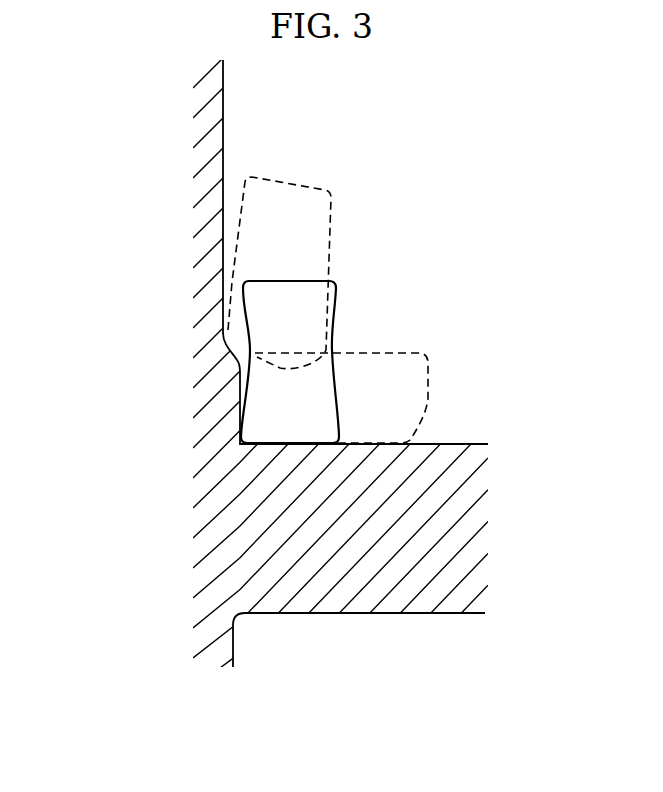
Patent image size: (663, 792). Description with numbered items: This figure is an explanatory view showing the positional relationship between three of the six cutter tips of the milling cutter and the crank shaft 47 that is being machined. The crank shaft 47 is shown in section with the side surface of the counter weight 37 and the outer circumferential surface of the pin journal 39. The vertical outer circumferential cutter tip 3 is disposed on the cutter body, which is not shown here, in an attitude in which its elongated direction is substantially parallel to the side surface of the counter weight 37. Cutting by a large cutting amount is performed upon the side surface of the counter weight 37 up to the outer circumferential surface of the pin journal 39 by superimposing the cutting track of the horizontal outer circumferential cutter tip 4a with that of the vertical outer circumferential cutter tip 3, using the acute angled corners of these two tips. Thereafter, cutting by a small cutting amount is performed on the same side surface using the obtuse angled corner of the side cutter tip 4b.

The vertical outer circumferential cutter tip 3 is at (338, 307).
The horizontal outer circumferential cutter tip 4a is at (428, 396).
The side cutter tip 4b is at (333, 189).
The counter weight 37 is at (224, 150).
The pin journal 39 is at (437, 614).
The crank shaft 47 is at (147, 158).